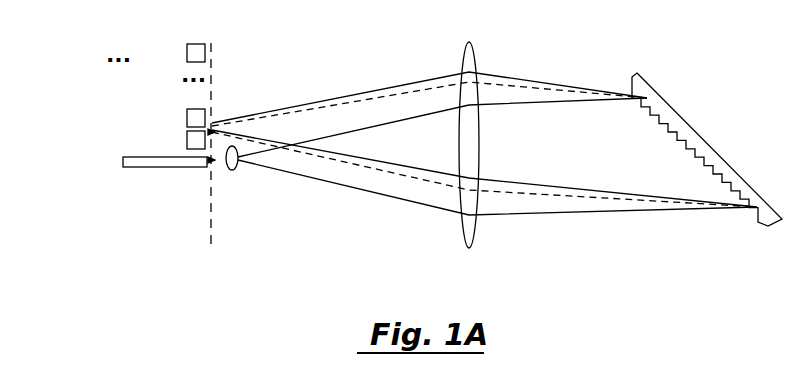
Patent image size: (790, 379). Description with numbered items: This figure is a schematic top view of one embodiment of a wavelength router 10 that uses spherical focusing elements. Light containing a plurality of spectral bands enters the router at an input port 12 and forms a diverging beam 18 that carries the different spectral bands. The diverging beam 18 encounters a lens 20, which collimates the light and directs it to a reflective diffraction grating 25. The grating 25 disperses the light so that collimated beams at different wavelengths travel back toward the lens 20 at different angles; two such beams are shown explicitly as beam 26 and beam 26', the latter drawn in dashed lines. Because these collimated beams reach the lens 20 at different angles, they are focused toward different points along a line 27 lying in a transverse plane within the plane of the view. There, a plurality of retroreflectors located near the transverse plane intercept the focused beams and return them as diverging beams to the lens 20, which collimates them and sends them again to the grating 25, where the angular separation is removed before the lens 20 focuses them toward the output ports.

The wavelength router 10 is at (236, 234).
The input port 12 is at (195, 167).
The diverging beam 18 is at (234, 170).
The lens 20 is at (460, 227).
The reflective diffraction grating 25 is at (641, 73).
The collimated beam 26 is at (429, 101).
The collimated beam 26' is at (429, 74).
The line 27 is at (212, 222).